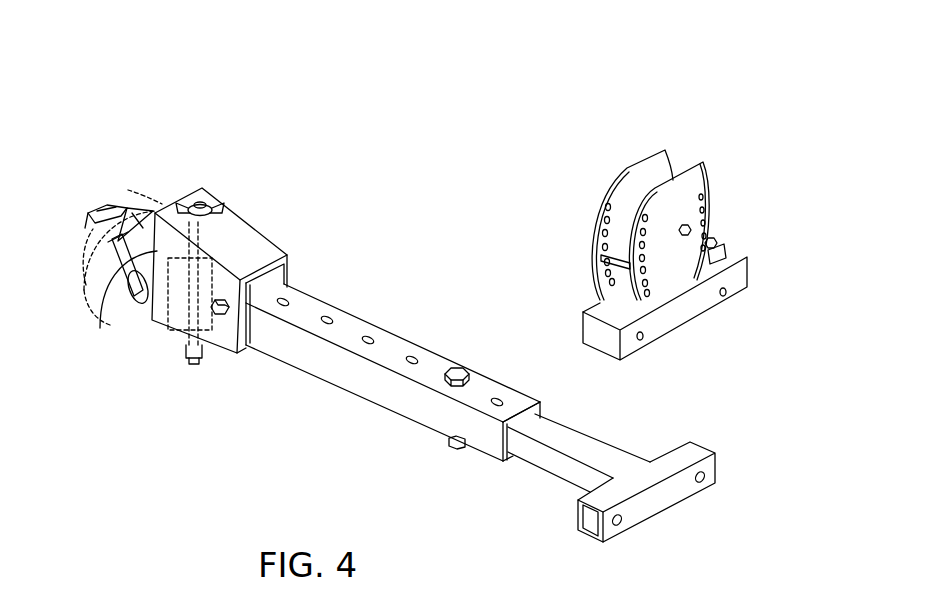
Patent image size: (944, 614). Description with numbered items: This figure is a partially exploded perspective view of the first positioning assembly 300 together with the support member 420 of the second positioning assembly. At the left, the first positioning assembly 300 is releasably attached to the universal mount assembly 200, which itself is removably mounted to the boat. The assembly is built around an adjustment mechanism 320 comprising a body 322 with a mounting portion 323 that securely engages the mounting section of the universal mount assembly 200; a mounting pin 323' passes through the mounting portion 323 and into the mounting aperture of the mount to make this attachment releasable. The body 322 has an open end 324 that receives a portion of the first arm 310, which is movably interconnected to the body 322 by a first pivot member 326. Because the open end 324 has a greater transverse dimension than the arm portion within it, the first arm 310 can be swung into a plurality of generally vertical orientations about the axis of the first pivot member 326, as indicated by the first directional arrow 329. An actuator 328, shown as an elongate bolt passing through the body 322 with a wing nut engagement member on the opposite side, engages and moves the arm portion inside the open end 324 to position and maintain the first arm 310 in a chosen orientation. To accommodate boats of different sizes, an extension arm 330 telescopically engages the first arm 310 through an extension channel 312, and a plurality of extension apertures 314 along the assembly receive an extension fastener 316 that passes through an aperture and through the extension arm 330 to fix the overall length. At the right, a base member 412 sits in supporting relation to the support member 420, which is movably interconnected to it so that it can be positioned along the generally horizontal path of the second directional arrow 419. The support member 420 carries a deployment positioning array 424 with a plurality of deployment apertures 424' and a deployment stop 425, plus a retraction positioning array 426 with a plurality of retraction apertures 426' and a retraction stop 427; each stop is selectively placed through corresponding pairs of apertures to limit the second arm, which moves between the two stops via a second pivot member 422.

The universal mount assembly 200 is at (102, 244).
The first positioning assembly 300 is at (416, 320).
The first arm 310 is at (429, 384).
The extension channel 312 is at (510, 425).
The extension apertures 314 is at (328, 320).
The extension fastener 316 is at (458, 370).
The adjustment mechanism 320 is at (240, 266).
The body 322 is at (173, 325).
The mounting portion 323 is at (92, 288).
The mounting pin 323' is at (117, 330).
The open end 324 is at (252, 344).
The first pivot member 326 is at (230, 297).
The actuator 328 is at (197, 195).
The first directional arrow 329 is at (272, 388).
The extension arm 330 is at (563, 472).
The base member 412 is at (737, 293).
The second directional arrow 419 is at (660, 92).
The support member 420 is at (677, 201).
The second pivot member 422 is at (683, 227).
The deployment positioning array 424 is at (604, 207).
The deployment apertures 424' is at (585, 200).
The deployment stop 425 is at (623, 268).
The retraction positioning array 426 is at (715, 213).
The retraction apertures 426' is at (750, 189).
The retraction stop 427 is at (705, 248).